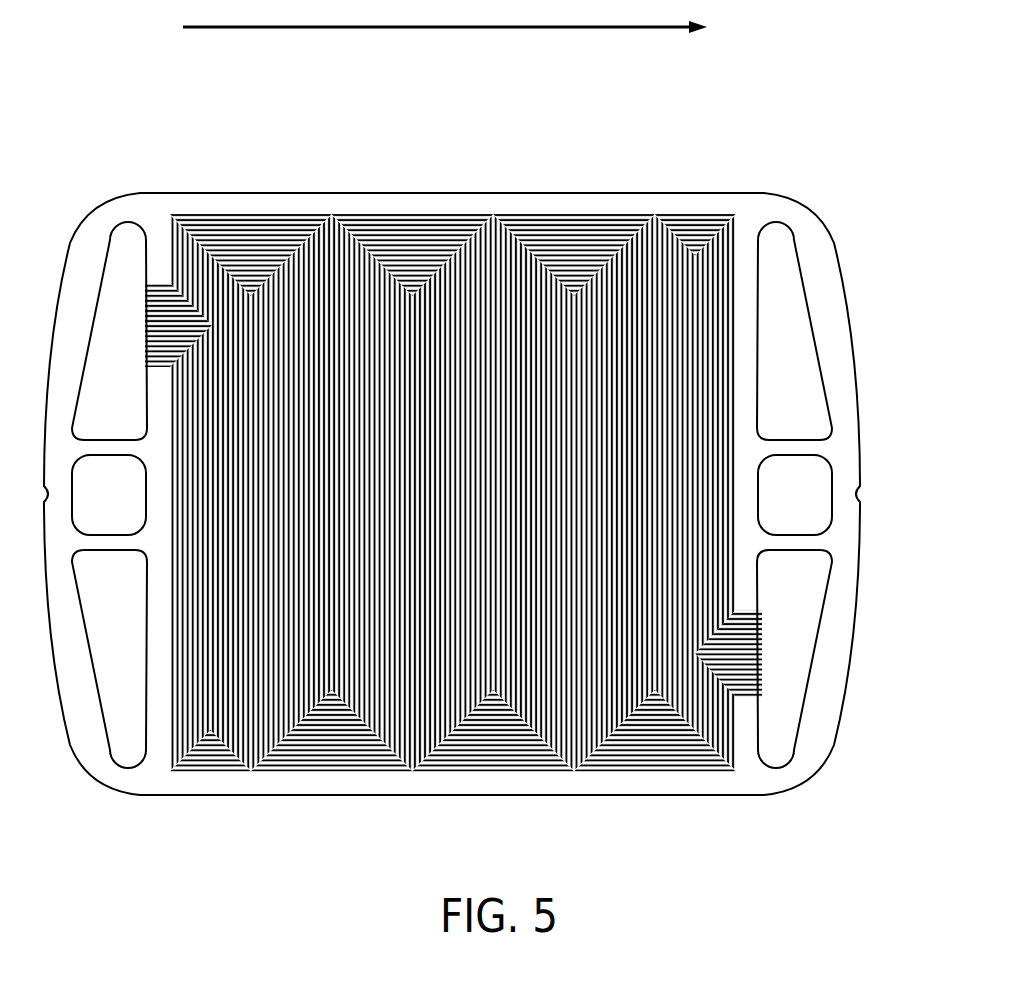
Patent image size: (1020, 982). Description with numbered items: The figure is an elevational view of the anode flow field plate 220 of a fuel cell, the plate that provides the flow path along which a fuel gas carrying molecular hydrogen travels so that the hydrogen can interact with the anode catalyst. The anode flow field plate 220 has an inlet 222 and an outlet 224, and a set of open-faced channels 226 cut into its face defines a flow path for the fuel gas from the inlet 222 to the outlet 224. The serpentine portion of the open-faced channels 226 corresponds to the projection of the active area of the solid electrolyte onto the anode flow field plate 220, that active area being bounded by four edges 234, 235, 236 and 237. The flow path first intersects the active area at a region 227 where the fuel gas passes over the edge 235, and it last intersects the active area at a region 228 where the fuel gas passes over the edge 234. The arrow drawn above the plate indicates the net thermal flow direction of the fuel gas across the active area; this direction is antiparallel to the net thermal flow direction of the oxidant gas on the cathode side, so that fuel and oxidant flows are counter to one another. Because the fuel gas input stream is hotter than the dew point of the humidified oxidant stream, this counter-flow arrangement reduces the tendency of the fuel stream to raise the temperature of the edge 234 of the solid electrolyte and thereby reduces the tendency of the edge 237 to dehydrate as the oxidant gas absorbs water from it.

The anode flow field plate 220 is at (245, 836).
The inlet 222 is at (125, 248).
The outlet 224 is at (800, 662).
The open-faced channels 226 is at (425, 220).
The region of the flow path 227 is at (160, 328).
The region of the flow path 228 is at (753, 692).
The edge 234 is at (733, 286).
The edge 235 is at (170, 662).
The edge 236 is at (440, 772).
The edge 237 is at (592, 217).